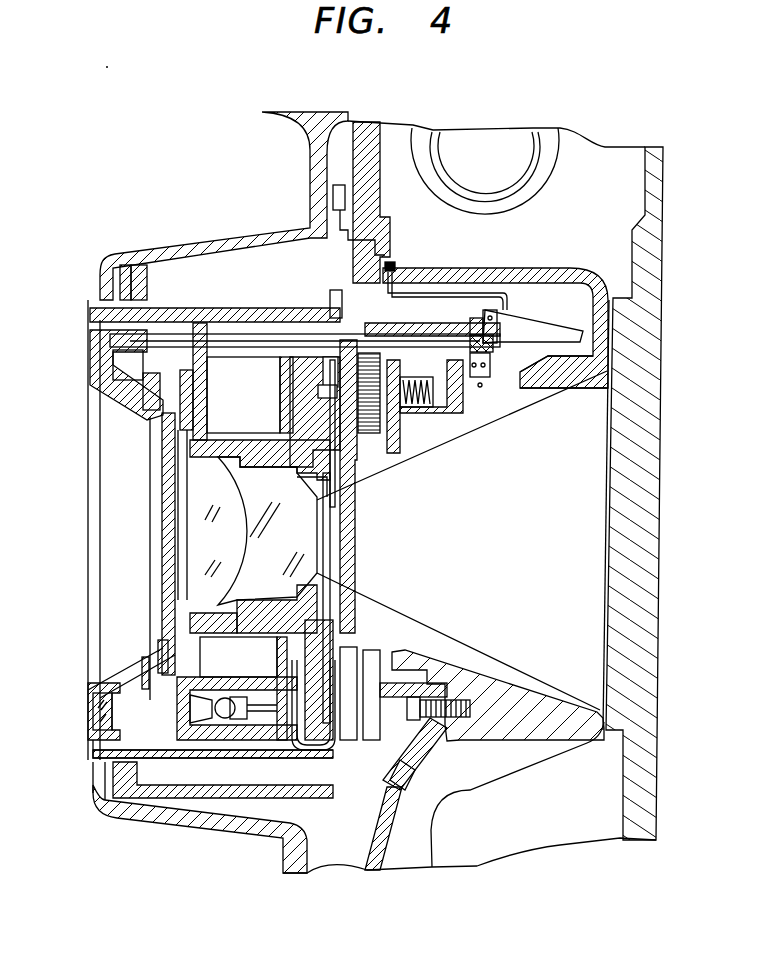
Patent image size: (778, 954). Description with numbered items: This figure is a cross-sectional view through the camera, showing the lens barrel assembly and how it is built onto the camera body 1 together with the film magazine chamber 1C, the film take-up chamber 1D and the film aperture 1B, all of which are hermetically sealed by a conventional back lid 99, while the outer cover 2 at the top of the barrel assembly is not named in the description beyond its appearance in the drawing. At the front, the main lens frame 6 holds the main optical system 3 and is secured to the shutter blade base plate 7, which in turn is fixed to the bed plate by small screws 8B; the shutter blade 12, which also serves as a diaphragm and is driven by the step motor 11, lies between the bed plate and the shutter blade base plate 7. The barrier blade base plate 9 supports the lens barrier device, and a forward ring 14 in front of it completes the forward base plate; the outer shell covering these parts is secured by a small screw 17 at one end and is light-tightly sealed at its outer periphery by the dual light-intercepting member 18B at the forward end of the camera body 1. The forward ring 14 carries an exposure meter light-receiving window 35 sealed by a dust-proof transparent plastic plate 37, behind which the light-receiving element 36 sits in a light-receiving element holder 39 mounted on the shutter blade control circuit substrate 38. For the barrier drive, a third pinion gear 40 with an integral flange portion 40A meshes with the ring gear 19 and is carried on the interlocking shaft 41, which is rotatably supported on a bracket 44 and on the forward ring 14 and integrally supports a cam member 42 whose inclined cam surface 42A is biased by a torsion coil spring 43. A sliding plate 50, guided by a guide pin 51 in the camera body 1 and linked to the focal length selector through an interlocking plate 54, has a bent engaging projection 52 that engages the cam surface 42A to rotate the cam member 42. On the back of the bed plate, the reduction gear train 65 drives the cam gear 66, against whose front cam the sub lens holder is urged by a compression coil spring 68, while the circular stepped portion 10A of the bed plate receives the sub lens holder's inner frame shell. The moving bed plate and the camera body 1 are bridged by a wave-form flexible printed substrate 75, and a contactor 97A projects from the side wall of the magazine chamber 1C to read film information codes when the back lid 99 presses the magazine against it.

The camera body 1 is at (500, 742).
The film opening 1B is at (603, 378).
The film magazine chamber 1C is at (410, 870).
The film take-up chamber 1D is at (392, 120).
The cover 2 is at (183, 246).
The main optical system 3 is at (190, 523).
The main lens frame 6 is at (232, 605).
The shutter blade base plate 7 is at (272, 600).
The small screws 8B is at (279, 656).
The barrier blade base plate 9 is at (210, 360).
The circular stepped portion 10A is at (352, 470).
The step motor 11 is at (215, 345).
The shutter blade 12 is at (330, 535).
The forward ring 14 is at (122, 392).
The small screw 17 is at (330, 300).
The dual light-intercepting member 18B is at (125, 265).
The ring gear 19 is at (151, 690).
The exposure meter light-receiving window 35 is at (88, 700).
The light-receiving element 36 is at (226, 697).
The dust-proof transparent plastic plate 37 is at (98, 720).
The shutter blade control circuit substrate 38 is at (282, 401).
The light-receiving element holder 39 is at (257, 745).
The third pinion gear 40 is at (127, 366).
The flange portion 40A is at (152, 418).
The interlocking shaft 41 is at (258, 345).
The cam member 42 is at (586, 330).
The cam surface 42A is at (552, 325).
The torsion coil spring 43 is at (490, 312).
The bracket 44 is at (465, 405).
The sliding plate 50 is at (440, 293).
The guide pin 51 is at (389, 262).
The engaging projection 52 is at (508, 305).
The interlocking plate 54 is at (340, 185).
The reduction gear train 65 is at (450, 410).
The cam gear 66 is at (366, 433).
The compression coil spring 68 is at (410, 407).
The flexible printed substrate 75 is at (352, 652).
The contactor 97A is at (430, 775).
The back lid 99 is at (658, 560).